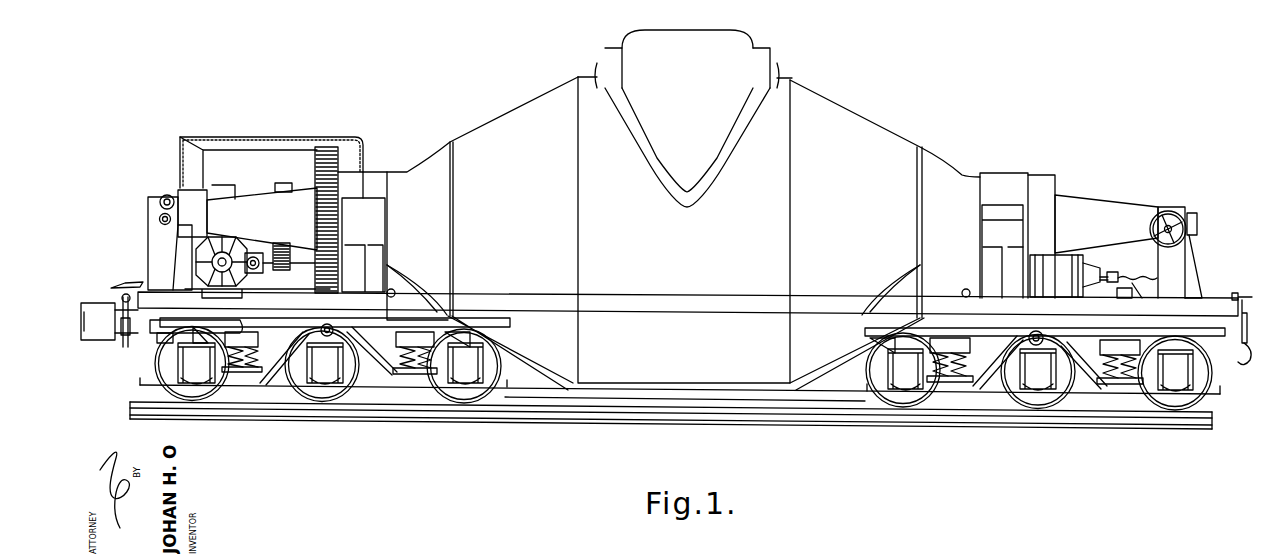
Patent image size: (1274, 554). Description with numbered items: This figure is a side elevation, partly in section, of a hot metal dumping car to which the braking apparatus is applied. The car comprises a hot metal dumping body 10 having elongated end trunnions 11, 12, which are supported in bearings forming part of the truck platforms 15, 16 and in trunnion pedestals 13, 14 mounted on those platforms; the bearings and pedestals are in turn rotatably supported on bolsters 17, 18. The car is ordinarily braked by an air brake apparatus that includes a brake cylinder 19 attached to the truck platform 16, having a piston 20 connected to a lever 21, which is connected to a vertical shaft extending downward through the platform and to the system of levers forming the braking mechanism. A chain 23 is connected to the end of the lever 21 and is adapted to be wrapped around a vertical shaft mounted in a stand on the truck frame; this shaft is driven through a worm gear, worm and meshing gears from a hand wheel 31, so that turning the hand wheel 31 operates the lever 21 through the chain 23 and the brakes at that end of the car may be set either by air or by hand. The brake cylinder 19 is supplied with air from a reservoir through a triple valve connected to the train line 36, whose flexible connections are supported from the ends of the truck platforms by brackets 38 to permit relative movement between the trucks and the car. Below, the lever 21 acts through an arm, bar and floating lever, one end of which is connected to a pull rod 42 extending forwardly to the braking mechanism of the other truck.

The hot metal dumping body 10 is at (843, 115).
The end trunnion 11 is at (258, 189).
The end trunnion 12 is at (1113, 211).
The trunnion pedestal 13 is at (178, 197).
The trunnion pedestal 14 is at (1182, 214).
The truck platform 15 is at (145, 288).
The truck platform 16 is at (1212, 304).
The bolster 17 is at (336, 310).
The bolster 18 is at (1024, 324).
The brake cylinder 19 is at (1069, 276).
The piston 20 is at (1107, 273).
The lever 21 is at (1118, 290).
The chain 23 is at (1145, 274).
The hand wheel 31 is at (1150, 230).
The train line 36 is at (397, 299).
The bracket 38 is at (389, 283).
The pull rod 42 is at (837, 394).